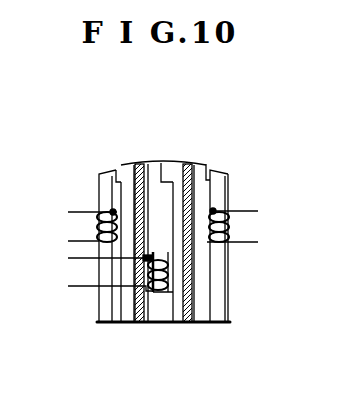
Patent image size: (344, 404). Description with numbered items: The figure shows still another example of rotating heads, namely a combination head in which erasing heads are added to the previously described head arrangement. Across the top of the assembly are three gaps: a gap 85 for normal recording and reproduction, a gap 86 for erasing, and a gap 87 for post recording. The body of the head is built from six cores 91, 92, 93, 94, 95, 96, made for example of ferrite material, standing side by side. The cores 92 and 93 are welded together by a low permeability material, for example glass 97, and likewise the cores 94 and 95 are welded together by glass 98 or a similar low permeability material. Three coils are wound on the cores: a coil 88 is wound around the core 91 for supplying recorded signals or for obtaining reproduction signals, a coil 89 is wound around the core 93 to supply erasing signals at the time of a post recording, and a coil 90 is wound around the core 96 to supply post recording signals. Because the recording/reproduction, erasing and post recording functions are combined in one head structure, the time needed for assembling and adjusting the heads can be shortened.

The gap 85 is at (120, 164).
The gap 86 is at (162, 160).
The gap 87 is at (214, 163).
The coil 88 is at (78, 211).
The coil 89 is at (85, 287).
The coil 90 is at (247, 243).
The core 91 is at (103, 322).
The core 92 is at (128, 324).
The core 93 is at (148, 324).
The core 94 is at (176, 322).
The core 95 is at (197, 323).
The core 96 is at (220, 323).
The glass 97 is at (136, 161).
The glass 98 is at (189, 161).